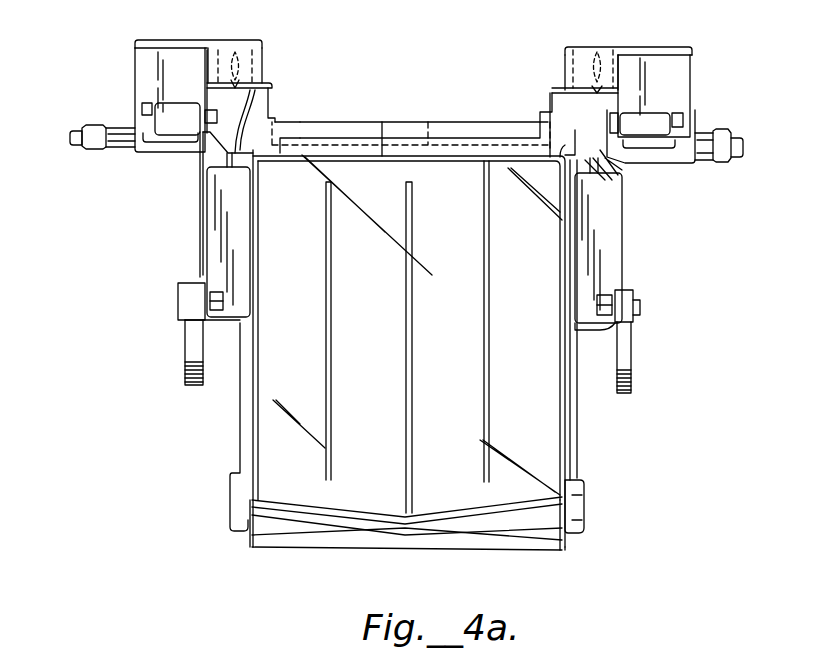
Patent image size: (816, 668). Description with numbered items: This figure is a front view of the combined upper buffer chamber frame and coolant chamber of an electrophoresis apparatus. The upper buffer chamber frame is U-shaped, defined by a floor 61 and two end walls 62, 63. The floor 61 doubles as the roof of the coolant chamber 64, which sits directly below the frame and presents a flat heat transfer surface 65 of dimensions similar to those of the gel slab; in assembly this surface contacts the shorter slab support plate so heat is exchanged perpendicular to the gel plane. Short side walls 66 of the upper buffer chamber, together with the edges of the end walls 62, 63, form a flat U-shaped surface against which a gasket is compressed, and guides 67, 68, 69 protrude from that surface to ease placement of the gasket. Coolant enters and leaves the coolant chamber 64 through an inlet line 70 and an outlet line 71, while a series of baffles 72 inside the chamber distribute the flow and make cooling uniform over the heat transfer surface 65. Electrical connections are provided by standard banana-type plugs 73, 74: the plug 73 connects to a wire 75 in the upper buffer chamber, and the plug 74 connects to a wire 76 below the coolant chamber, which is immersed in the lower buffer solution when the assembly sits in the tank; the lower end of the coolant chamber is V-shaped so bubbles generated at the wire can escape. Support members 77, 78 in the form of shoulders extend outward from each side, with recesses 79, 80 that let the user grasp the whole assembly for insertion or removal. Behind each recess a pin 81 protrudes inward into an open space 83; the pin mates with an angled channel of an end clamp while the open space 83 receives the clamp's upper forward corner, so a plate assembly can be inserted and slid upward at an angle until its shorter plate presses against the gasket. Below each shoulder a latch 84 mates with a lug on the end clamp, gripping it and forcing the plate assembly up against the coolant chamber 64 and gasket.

The floor 61 is at (382, 122).
The end wall 62 is at (278, 100).
The end wall 63 is at (548, 90).
The coolant chamber 64 is at (252, 385).
The heat transfer surface 65 is at (308, 393).
The side walls 66 is at (282, 122).
The guide 67 is at (275, 92).
The guide 68 is at (335, 127).
The guide 69 is at (548, 110).
The inlet line 70 is at (73, 128).
The outlet line 71 is at (738, 140).
The baffles 72 is at (483, 313).
The banana-type plug 73 is at (236, 45).
The banana-type plug 74 is at (603, 48).
The wire 75 is at (428, 122).
The wire 76 is at (522, 538).
The support member 77 is at (150, 40).
The support member 78 is at (690, 46).
The recess 79 is at (145, 70).
The recess 80 is at (680, 68).
The pin 81 is at (620, 163).
The open space 83 is at (620, 178).
The latch 84 is at (633, 357).